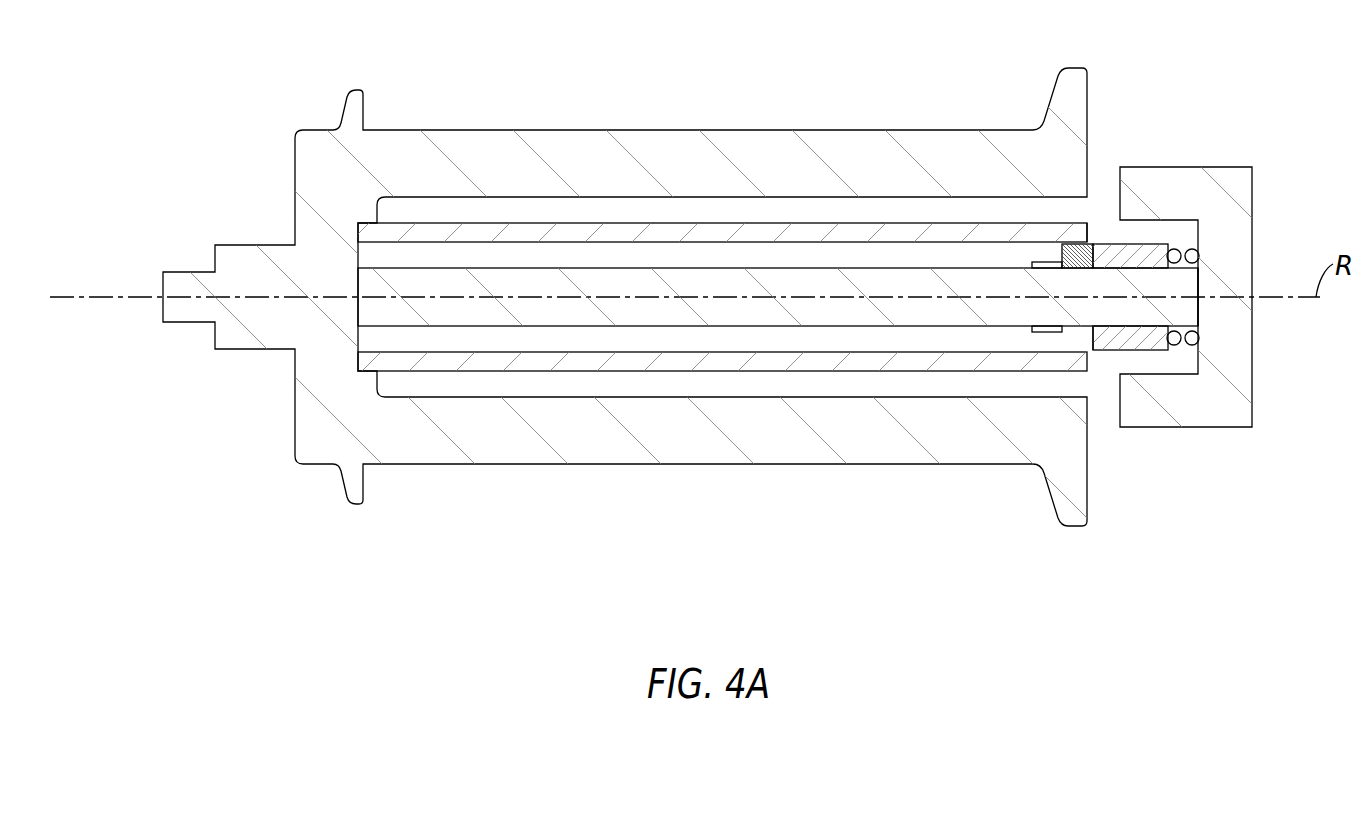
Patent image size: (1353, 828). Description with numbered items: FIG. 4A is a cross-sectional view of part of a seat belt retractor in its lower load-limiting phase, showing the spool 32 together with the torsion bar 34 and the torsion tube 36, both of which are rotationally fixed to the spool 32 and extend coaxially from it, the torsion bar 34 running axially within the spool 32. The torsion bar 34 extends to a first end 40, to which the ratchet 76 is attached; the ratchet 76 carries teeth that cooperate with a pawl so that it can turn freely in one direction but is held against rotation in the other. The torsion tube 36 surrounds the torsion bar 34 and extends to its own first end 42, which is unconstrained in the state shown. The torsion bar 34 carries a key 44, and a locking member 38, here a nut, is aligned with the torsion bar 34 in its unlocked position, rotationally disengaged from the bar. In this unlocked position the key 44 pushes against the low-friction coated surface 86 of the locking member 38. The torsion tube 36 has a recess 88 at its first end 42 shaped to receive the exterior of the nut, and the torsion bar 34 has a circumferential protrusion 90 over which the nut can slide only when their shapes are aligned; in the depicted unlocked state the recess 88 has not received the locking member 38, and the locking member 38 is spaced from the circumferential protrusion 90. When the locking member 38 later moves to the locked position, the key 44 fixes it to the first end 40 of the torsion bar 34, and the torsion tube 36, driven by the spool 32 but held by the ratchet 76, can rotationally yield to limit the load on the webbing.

The spool 32 is at (670, 129).
The torsion bar 34 is at (813, 327).
The torsion tube 36 is at (795, 224).
The locking member 38 is at (1102, 350).
The first end 40 is at (1202, 276).
The first end 42 is at (1088, 232).
The key 44 is at (1057, 257).
The ratchet 76 is at (1221, 167).
The surface 86 is at (1093, 342).
The recess 88 is at (1017, 240).
The circumferential protrusion 90 is at (1045, 333).